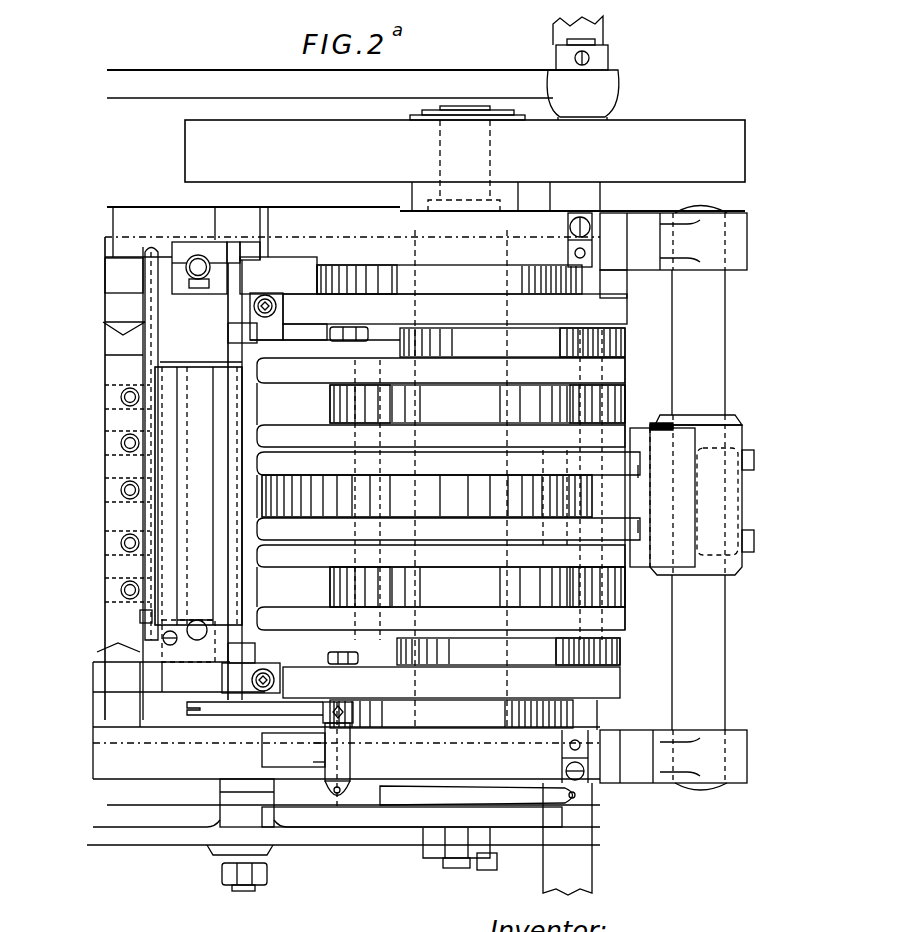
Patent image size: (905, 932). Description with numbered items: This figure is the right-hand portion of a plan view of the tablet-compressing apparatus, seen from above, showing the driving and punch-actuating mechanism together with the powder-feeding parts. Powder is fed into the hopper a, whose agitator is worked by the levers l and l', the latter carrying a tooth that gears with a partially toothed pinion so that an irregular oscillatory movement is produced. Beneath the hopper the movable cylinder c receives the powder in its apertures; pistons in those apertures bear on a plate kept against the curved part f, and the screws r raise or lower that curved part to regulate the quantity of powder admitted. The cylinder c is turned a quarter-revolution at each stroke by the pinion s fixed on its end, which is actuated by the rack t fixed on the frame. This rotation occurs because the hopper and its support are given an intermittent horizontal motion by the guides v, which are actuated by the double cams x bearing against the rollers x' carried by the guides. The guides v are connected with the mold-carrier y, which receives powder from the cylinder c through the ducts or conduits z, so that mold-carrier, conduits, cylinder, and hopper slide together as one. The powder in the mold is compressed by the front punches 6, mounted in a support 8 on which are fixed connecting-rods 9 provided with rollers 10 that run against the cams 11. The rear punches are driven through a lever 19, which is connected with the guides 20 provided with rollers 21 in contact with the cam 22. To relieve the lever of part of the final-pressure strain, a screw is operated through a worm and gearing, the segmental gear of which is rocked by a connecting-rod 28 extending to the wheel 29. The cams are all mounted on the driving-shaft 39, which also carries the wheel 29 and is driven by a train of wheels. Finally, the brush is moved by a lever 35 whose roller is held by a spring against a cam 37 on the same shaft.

The connecting-rod 28 is at (140, 88).
The wheel 29 is at (465, 151).
The driving-shaft 39 is at (463, 106).
The lever 19 is at (712, 500).
The guides 20 is at (661, 497).
The rollers 21 is at (575, 498).
The cam 22 is at (427, 496).
The connecting-rods 9 is at (441, 494).
The support 8 is at (274, 495).
The rollers 10 is at (350, 405).
The cams 11 is at (477, 496).
The double cams x is at (471, 496).
The rollers x' is at (488, 511).
The guides v is at (455, 496).
The screws r is at (266, 300).
The pinion s is at (200, 252).
The rack t is at (128, 250).
The curved part f is at (243, 332).
The ducts or conduits z is at (128, 397).
The mold-carrier y is at (127, 490).
The hopper a is at (198, 496).
The front punches 6 is at (170, 450).
The movable cylinder c is at (195, 565).
The lever l is at (247, 756).
The lever l' is at (477, 831).
The lever 35 is at (142, 835).
The cam 37 is at (455, 817).